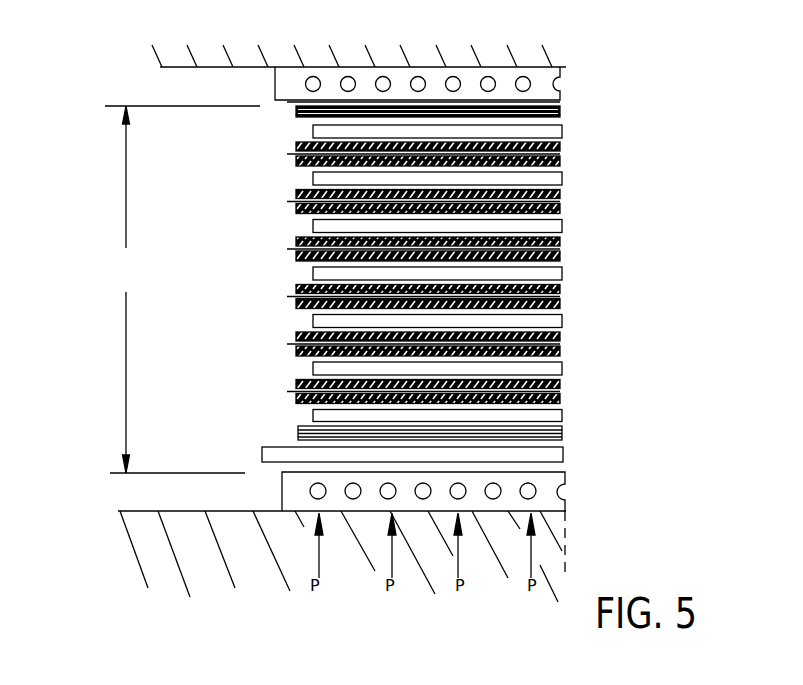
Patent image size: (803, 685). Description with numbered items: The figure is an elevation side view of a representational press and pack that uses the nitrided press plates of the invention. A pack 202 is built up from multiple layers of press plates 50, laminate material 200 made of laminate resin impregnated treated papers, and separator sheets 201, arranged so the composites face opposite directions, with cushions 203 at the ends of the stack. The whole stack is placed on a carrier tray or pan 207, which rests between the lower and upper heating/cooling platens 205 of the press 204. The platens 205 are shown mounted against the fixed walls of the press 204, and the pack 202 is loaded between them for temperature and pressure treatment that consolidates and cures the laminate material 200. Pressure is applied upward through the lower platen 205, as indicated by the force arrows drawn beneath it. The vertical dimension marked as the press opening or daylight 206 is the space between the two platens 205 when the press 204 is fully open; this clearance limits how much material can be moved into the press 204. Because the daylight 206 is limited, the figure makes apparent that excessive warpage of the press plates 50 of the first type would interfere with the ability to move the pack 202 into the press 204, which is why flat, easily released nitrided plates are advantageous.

The press plates 50 is at (558, 365).
The laminate material 200 is at (563, 397).
The separator sheets 201 is at (560, 207).
The pack 202 is at (268, 266).
The cushions 203 is at (552, 130).
The press 204 is at (217, 56).
The heating/cooling platens 205 is at (545, 80).
The press opening or daylight 206 is at (182, 289).
The carrier tray or pan 207 is at (264, 452).